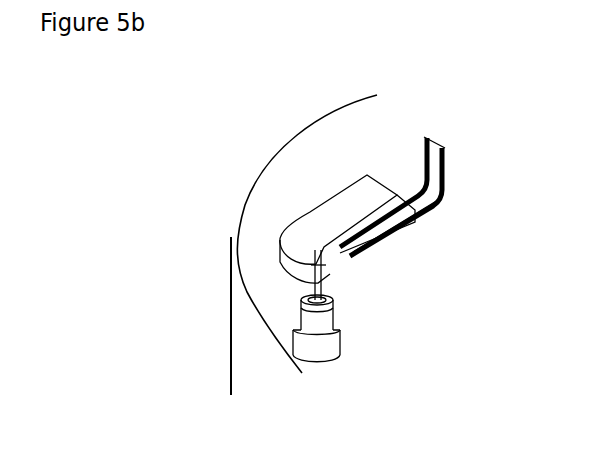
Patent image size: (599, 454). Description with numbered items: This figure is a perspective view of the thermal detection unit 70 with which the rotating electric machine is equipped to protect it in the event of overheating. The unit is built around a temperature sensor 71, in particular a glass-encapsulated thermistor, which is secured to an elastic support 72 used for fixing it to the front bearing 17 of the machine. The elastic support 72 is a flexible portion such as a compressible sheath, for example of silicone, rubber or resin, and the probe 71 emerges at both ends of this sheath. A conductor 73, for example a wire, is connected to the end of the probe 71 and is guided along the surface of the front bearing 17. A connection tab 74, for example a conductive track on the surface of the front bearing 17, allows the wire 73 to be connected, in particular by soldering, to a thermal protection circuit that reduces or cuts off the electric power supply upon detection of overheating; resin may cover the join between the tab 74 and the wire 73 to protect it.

The front bearing 17 is at (280, 198).
The thermal detection unit 70 is at (262, 312).
The temperature sensor 71 is at (280, 260).
The elastic support 72 is at (343, 315).
The conductor 73 is at (328, 267).
The connection tab 74 is at (448, 220).